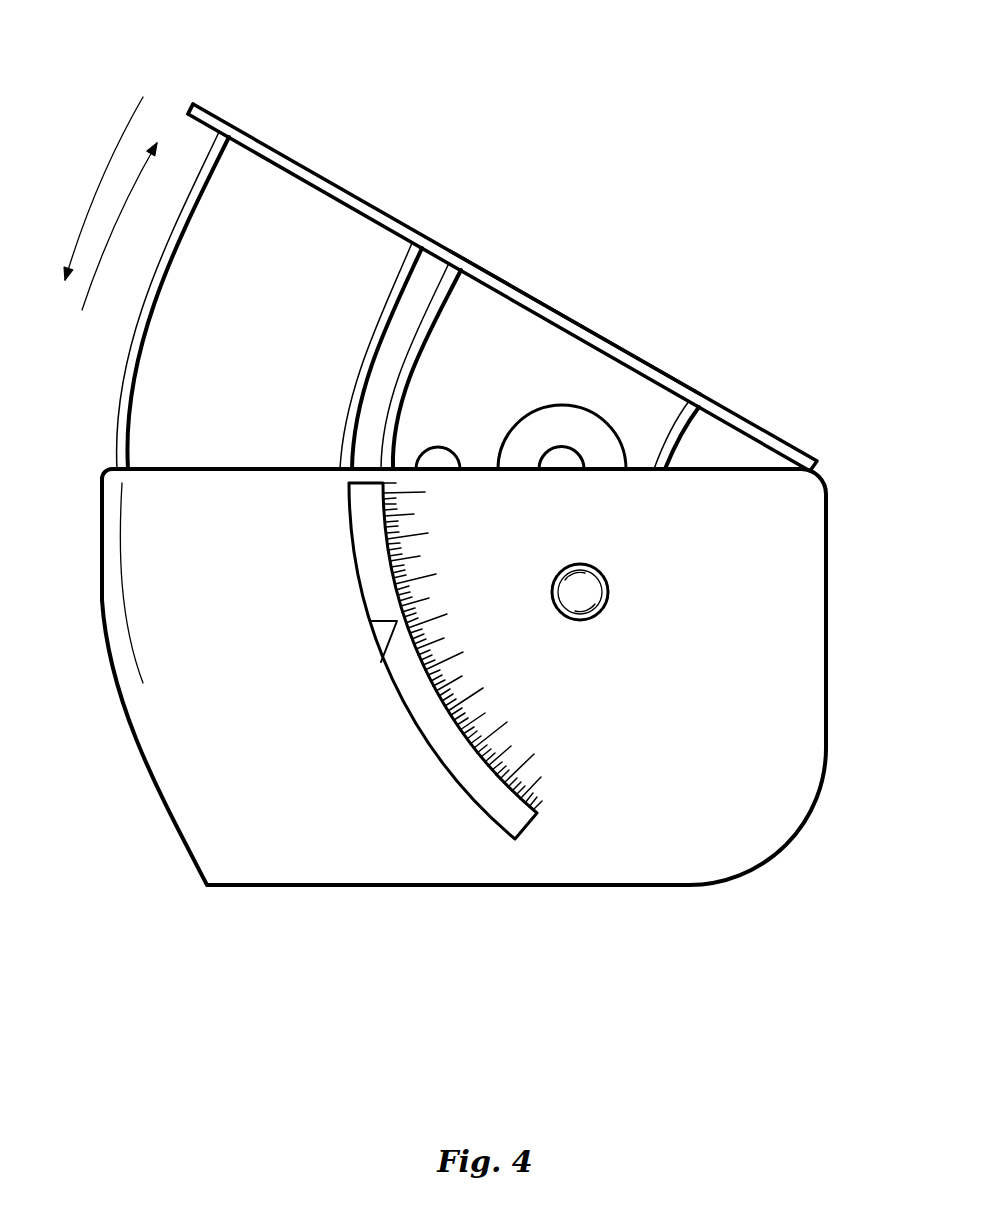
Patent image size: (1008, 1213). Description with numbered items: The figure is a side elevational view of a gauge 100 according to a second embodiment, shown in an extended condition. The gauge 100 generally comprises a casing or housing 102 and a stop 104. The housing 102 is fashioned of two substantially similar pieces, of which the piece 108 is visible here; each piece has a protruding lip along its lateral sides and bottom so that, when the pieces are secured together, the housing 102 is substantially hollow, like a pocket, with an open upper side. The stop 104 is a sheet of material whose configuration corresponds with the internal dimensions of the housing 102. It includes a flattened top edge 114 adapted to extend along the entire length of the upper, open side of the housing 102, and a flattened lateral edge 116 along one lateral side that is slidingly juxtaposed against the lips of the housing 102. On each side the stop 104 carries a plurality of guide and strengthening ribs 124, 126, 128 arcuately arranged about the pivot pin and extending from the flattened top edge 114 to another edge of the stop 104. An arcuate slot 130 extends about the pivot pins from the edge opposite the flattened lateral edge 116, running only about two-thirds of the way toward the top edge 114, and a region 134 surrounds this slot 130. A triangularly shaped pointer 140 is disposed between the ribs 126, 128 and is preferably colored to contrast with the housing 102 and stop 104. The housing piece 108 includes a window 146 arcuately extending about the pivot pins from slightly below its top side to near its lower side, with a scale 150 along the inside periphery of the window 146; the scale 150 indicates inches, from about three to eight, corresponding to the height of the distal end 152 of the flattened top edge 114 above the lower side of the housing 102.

The gauge 100 is at (758, 390).
The housing 102 is at (838, 650).
The stop 104 is at (355, 155).
The piece 108 is at (430, 583).
The flattened top edge 114 is at (552, 307).
The flattened lateral edge 116 is at (123, 382).
The guide and strengthening rib 124 is at (678, 405).
The guide and strengthening rib 126 is at (452, 295).
The guide and strengthening rib 128 is at (413, 247).
The arcuate slot 130 is at (570, 452).
The region 134 is at (560, 418).
The pointer 140 is at (381, 662).
The window 146 is at (510, 812).
The scale 150 is at (550, 783).
The distal end 152 is at (193, 100).